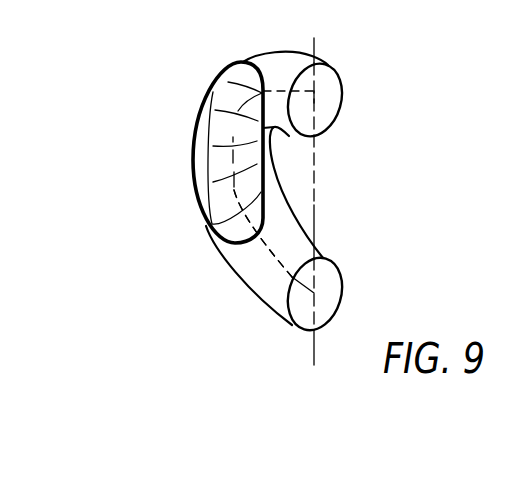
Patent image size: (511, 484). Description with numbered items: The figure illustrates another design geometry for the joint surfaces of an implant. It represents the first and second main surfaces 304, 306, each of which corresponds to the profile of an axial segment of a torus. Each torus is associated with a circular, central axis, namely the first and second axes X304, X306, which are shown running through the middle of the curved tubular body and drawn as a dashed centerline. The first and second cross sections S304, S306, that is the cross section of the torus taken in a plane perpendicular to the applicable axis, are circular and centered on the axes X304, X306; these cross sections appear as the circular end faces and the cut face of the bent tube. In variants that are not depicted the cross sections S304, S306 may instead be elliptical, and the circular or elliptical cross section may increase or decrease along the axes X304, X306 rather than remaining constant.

The first main surface 304 is at (214, 176).
The second main surface 306 is at (235, 126).
The first cross section S304 is at (347, 96).
The second cross section S306 is at (343, 96).
The first axis X304 is at (229, 266).
The second axis X306 is at (274, 260).